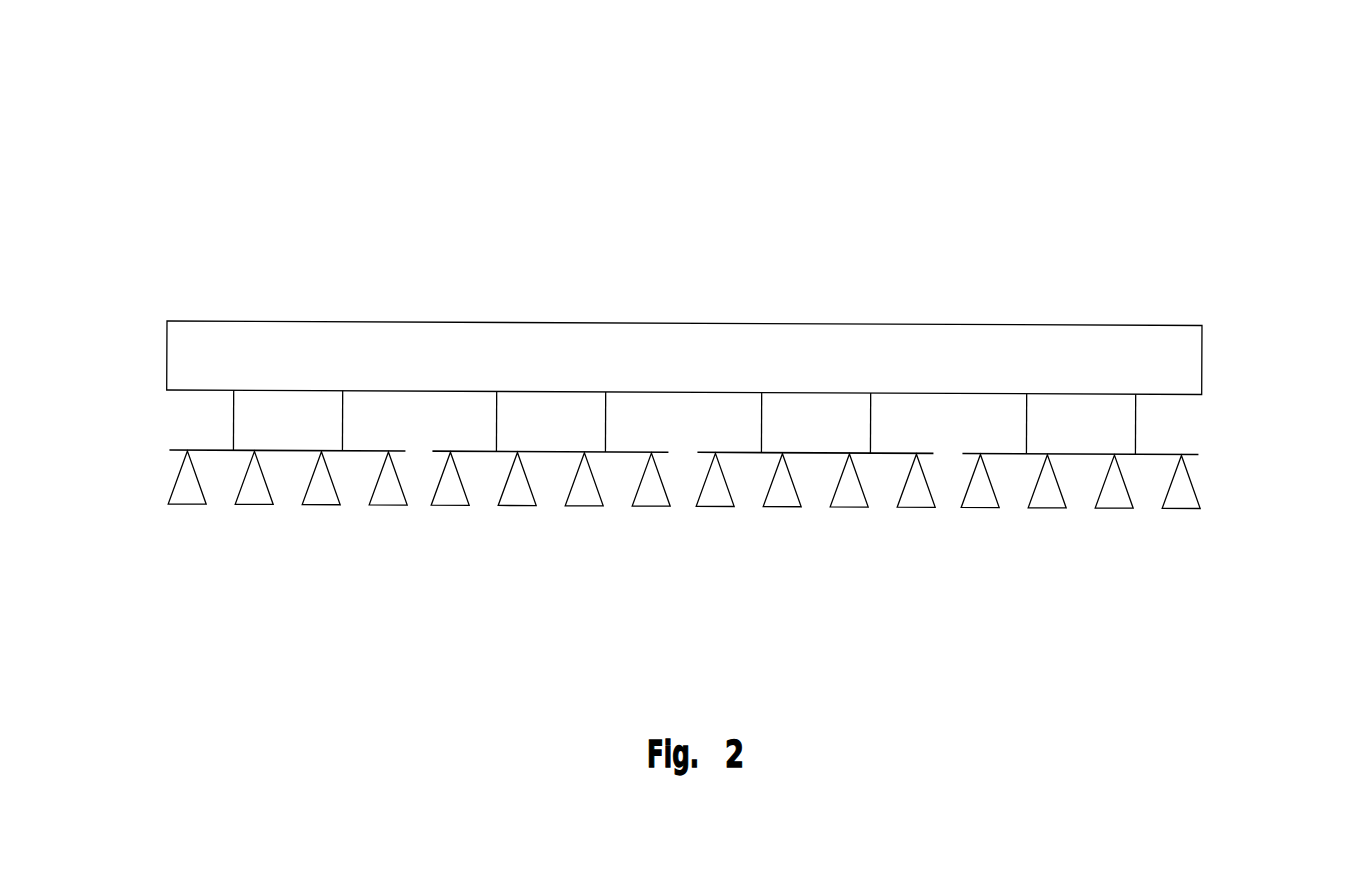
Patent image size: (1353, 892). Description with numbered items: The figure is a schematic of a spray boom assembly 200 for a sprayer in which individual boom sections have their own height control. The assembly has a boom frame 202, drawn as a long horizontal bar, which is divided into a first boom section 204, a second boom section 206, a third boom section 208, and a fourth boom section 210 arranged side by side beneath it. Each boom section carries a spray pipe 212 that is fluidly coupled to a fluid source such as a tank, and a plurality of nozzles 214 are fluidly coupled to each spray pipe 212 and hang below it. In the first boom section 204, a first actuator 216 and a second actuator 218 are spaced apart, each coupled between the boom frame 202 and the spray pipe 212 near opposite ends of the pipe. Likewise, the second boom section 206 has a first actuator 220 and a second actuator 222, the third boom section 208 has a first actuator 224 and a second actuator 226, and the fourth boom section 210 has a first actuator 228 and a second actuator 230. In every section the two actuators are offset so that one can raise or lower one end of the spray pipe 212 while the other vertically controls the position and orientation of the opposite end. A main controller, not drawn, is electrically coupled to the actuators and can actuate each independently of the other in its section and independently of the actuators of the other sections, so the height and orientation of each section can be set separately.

The spray boom assembly 200 is at (1223, 195).
The boom frame 202 is at (684, 345).
The first boom section 204 is at (277, 532).
The second boom section 206 is at (557, 538).
The third boom section 208 is at (836, 549).
The fourth boom section 210 is at (1090, 546).
The spray pipe 212 is at (207, 450).
The nozzles 214 is at (188, 505).
The first actuator 216 is at (235, 411).
The second actuator 218 is at (343, 411).
The first actuator 220 is at (498, 411).
The second actuator 222 is at (606, 411).
The first actuator 224 is at (763, 411).
The second actuator 226 is at (871, 411).
The first actuator 228 is at (1028, 411).
The second actuator 230 is at (1136, 411).